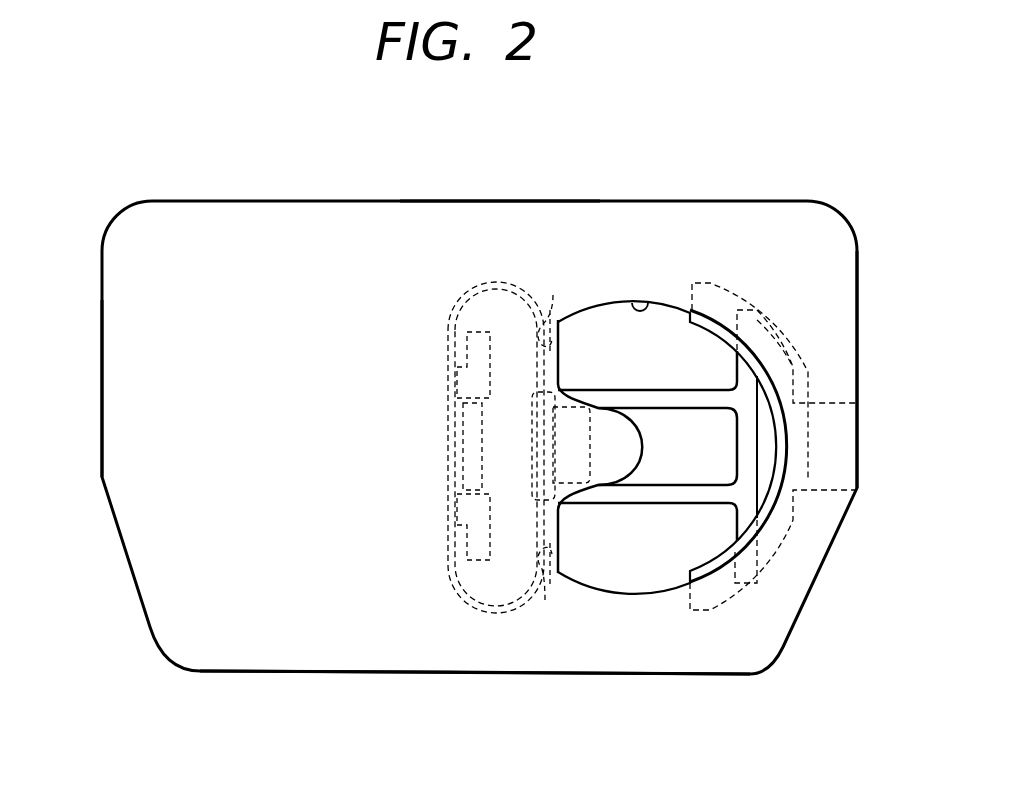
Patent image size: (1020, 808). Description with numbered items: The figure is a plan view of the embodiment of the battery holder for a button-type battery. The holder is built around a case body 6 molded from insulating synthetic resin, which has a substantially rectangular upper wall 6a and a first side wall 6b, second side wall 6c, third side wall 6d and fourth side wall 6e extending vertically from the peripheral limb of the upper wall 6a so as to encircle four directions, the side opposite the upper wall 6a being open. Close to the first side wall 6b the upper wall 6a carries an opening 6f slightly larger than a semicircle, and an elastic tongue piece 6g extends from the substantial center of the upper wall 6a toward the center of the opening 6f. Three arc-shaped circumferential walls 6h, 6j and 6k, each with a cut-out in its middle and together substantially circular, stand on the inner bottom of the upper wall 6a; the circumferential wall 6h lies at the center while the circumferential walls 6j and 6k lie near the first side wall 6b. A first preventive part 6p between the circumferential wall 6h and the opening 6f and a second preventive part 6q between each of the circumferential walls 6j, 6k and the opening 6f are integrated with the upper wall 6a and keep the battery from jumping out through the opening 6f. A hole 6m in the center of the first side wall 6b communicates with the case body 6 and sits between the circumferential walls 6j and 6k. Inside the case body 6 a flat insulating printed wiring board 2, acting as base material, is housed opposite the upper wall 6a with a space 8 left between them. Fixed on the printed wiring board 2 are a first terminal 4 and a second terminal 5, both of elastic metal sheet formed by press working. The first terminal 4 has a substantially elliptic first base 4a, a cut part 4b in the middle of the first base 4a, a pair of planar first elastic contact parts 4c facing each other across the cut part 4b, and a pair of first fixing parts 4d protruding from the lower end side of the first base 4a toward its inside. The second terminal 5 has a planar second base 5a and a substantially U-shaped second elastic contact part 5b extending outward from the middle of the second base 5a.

The printed wiring board 2 is at (732, 438).
The first terminal 4 is at (495, 445).
The first base 4a is at (460, 420).
The cut part 4b is at (560, 390).
The first elastic contact parts 4c is at (553, 295).
The first fixing parts 4d is at (470, 508).
The second terminal 5 is at (757, 435).
The second base 5a is at (750, 468).
The second elastic contact part 5b is at (683, 495).
The case body 6 is at (324, 201).
The upper wall 6a is at (347, 650).
The first side wall 6b is at (857, 297).
The second side wall 6c is at (102, 392).
The third side wall 6d is at (427, 672).
The fourth side wall 6e is at (493, 200).
The opening 6f is at (642, 300).
The tongue piece 6g is at (623, 445).
The circumferential wall 6h is at (467, 460).
The circumferential wall 6j is at (712, 280).
The circumferential wall 6k is at (710, 613).
The hole 6m is at (857, 432).
The first preventive part 6p is at (528, 527).
The second preventive part 6q is at (778, 372).
The space 8 is at (610, 574).